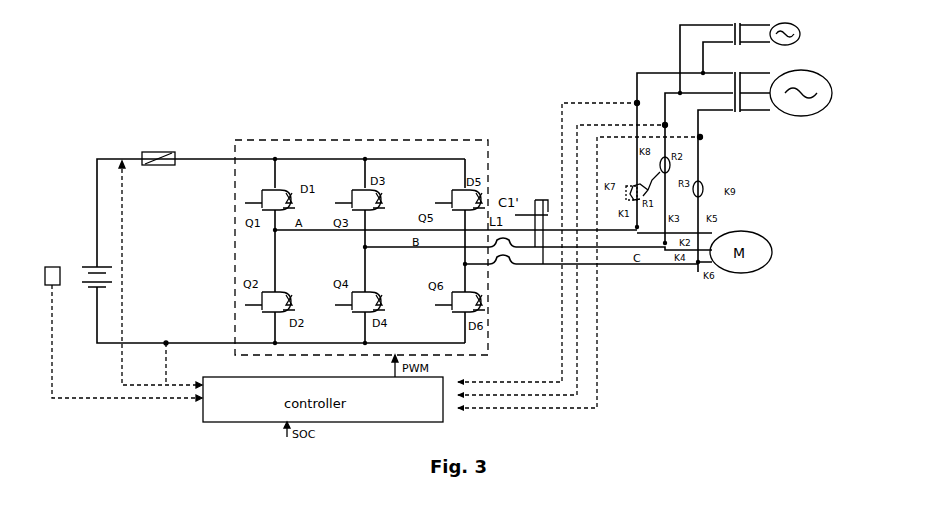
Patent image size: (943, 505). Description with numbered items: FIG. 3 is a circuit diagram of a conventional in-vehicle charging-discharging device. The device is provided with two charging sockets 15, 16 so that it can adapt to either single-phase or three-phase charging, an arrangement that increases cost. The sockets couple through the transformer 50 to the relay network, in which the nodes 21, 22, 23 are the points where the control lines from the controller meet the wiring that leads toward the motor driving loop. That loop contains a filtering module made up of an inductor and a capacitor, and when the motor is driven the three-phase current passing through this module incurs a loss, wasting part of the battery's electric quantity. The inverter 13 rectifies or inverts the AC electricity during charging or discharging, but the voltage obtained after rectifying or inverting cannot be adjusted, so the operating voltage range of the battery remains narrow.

The inverter 13 is at (268, 140).
The charging socket 15 is at (800, 31).
The charging socket 16 is at (815, 72).
The first relay node 21 is at (634, 103).
The second relay node 22 is at (667, 125).
The third relay node 23 is at (703, 137).
The transformer 50 is at (738, 65).